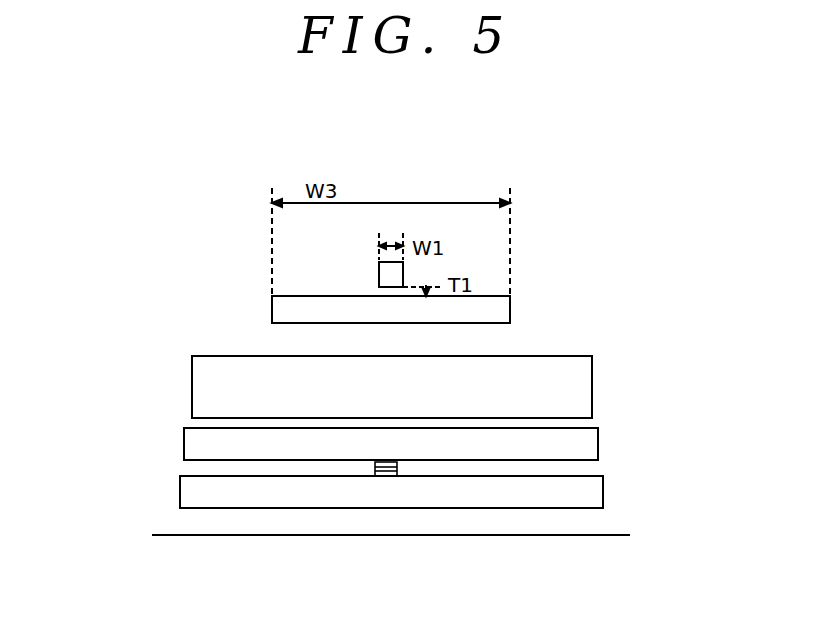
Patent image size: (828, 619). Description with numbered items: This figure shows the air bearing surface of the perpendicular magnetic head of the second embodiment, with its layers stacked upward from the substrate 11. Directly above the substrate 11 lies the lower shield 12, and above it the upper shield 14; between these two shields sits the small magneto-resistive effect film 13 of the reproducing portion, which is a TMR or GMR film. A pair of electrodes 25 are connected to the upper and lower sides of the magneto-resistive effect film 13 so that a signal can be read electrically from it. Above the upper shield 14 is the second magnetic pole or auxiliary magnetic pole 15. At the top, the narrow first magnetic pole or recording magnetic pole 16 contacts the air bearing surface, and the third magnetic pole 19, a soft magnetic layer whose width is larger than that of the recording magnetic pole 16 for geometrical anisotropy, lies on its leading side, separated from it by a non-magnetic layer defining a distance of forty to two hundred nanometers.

The substrate 11 is at (197, 558).
The lower shield 12 is at (196, 498).
The magneto-resistive effect film 13 is at (382, 477).
The upper shield 14 is at (196, 446).
The second magnetic pole or auxiliary magnetic pole 15 is at (197, 390).
The first magnetic pole or recording magnetic pole 16 is at (379, 273).
The third magnetic pole 19 is at (290, 310).
The lead layers 25 is at (395, 463).